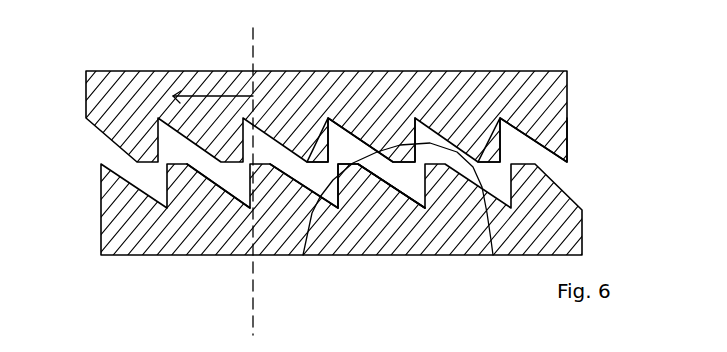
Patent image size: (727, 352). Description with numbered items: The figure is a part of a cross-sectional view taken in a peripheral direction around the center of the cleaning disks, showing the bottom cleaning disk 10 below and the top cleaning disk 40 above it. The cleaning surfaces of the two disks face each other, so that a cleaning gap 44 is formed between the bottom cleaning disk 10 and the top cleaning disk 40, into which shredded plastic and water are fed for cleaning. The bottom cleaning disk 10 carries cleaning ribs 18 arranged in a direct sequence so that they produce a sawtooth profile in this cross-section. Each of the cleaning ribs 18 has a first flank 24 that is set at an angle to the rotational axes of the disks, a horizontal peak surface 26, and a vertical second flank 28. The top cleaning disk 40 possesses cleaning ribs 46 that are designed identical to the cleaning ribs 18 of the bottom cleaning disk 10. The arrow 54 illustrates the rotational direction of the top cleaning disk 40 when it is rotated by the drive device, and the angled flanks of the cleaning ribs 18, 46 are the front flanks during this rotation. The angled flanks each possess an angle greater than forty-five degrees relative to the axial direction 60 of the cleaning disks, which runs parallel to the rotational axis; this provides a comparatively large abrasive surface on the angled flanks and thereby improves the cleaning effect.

The bottom cleaning disk 10 is at (321, 240).
The cleaning ribs 18 is at (365, 193).
The first flank 24 is at (398, 189).
The peak surface 26 is at (493, 255).
The second flank 28 is at (313, 194).
The top cleaning disk 40 is at (325, 82).
The cleaning gap 44 is at (550, 165).
The cleaning ribs 46 is at (402, 140).
The arrow 54 is at (213, 93).
The axial direction 60 is at (257, 33).